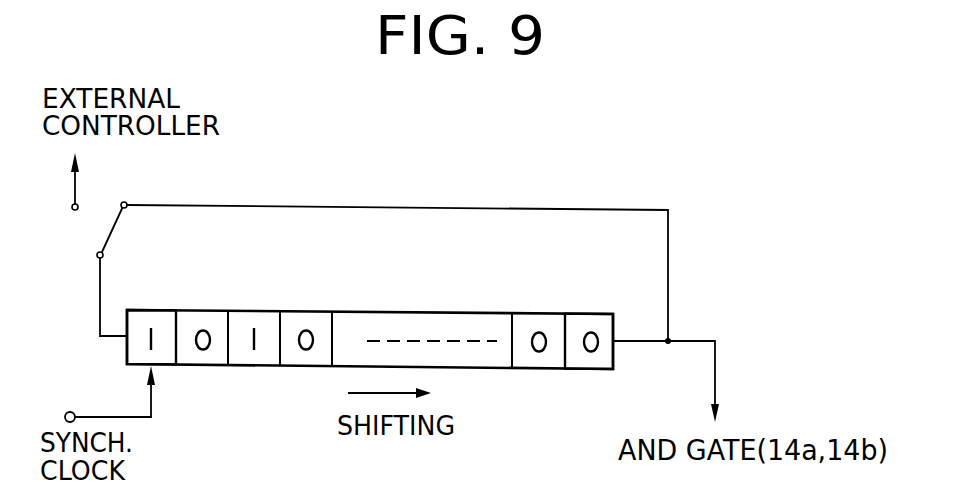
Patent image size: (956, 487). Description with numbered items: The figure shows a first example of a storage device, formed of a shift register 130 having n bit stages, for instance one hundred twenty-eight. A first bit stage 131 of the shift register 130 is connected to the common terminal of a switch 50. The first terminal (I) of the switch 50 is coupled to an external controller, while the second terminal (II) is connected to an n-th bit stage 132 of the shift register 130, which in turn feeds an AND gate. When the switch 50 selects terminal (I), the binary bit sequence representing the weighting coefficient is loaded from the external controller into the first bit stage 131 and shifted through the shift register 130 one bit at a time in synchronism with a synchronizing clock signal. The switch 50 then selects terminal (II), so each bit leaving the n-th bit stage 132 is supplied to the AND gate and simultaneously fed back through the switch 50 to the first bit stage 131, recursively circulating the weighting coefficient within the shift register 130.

The switch 50 is at (82, 241).
The shift register 130 is at (378, 307).
The first bit stage 131 is at (155, 310).
The n-th bit stage 132 is at (585, 316).